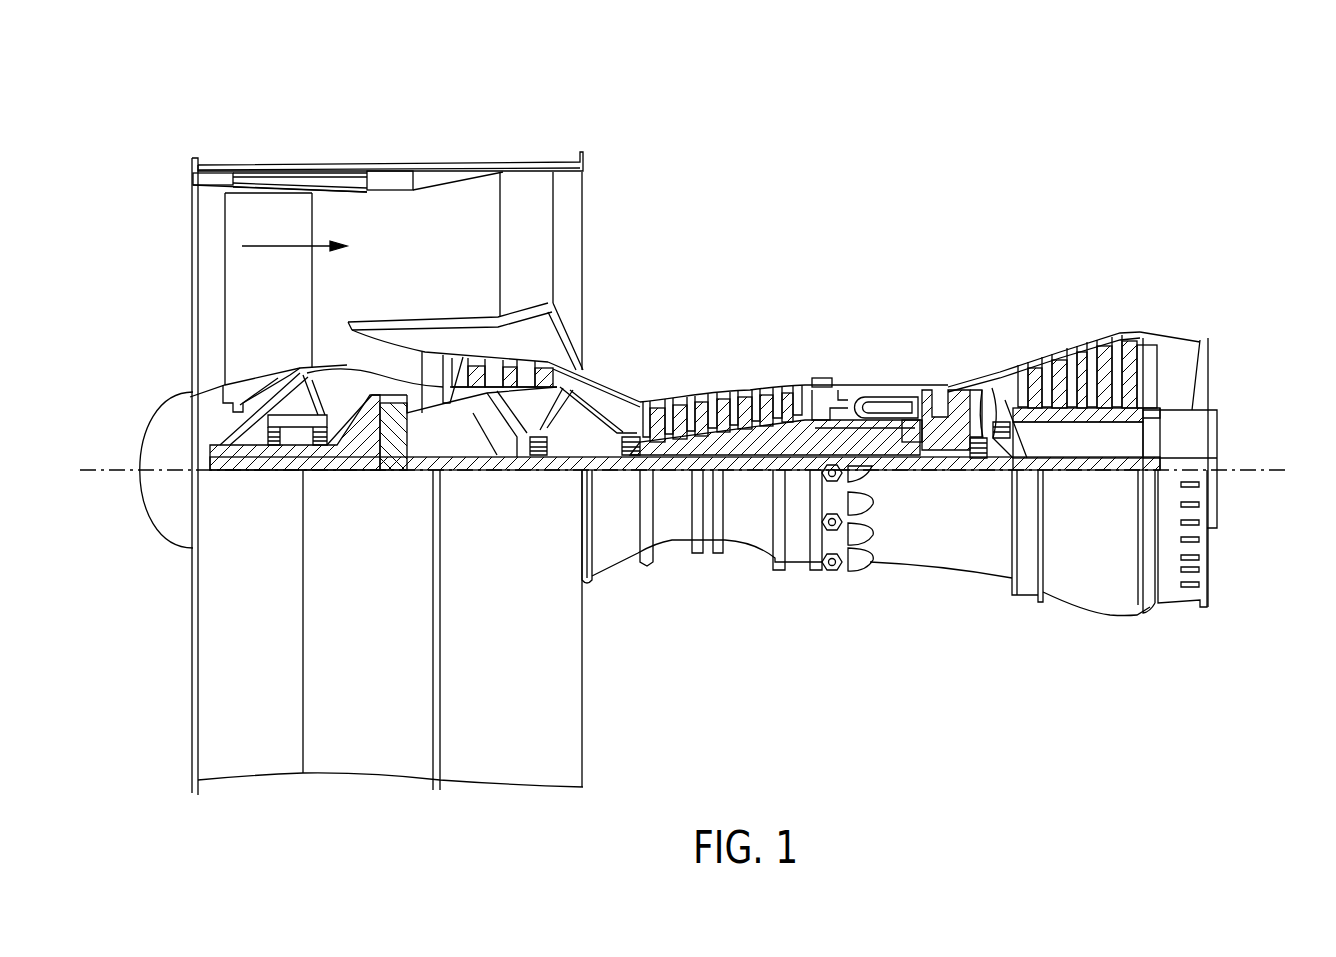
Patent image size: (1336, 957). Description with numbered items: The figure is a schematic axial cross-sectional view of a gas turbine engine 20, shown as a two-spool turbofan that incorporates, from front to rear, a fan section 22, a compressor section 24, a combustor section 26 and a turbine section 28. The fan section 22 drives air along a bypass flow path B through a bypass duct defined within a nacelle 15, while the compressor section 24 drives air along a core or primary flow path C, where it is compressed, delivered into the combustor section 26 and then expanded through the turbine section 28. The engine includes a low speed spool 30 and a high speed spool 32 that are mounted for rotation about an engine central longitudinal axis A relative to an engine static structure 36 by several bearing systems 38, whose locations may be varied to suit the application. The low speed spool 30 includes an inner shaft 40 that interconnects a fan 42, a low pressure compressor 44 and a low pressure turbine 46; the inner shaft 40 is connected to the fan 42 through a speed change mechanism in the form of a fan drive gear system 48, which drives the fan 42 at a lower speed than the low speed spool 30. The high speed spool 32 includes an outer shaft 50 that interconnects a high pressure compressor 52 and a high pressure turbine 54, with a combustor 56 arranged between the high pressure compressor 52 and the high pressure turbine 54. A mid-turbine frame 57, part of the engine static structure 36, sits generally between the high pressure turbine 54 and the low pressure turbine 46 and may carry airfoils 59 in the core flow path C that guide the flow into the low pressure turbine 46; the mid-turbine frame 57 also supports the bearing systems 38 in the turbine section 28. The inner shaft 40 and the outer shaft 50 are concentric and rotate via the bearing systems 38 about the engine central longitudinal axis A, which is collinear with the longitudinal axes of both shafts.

The gas turbine engine 20 is at (902, 170).
The fan section 22 is at (302, 150).
The compressor section 24 is at (636, 354).
The combustor section 26 is at (878, 340).
The turbine section 28 is at (1034, 312).
The nacelle 15 is at (386, 182).
The low speed spool 30 is at (752, 470).
The high speed spool 32 is at (808, 403).
The engine static structure 36 is at (797, 542).
The bearing systems 38 is at (545, 472).
The inner shaft 40 is at (607, 472).
The fan 42 is at (278, 285).
The low pressure compressor 44 is at (522, 362).
The low pressure turbine 46 is at (1078, 345).
The fan drive gear system 48 is at (395, 472).
The outer shaft 50 is at (883, 460).
The high pressure compressor 52 is at (748, 392).
The high pressure turbine 54 is at (942, 387).
The combustor 56 is at (887, 404).
The mid-turbine frame 57 is at (994, 362).
The airfoils 59 is at (990, 396).
The engine central longitudinal axis A is at (1262, 470).
The bypass flow path B is at (277, 245).
The core flow path C is at (362, 350).